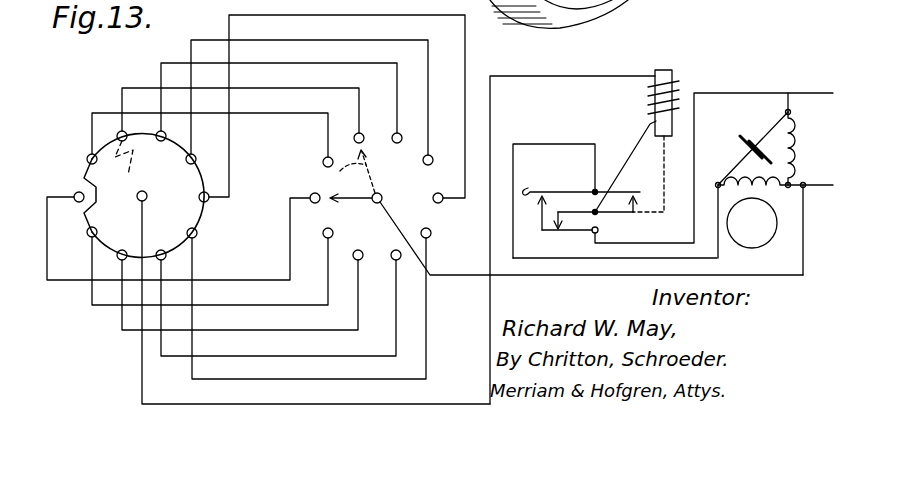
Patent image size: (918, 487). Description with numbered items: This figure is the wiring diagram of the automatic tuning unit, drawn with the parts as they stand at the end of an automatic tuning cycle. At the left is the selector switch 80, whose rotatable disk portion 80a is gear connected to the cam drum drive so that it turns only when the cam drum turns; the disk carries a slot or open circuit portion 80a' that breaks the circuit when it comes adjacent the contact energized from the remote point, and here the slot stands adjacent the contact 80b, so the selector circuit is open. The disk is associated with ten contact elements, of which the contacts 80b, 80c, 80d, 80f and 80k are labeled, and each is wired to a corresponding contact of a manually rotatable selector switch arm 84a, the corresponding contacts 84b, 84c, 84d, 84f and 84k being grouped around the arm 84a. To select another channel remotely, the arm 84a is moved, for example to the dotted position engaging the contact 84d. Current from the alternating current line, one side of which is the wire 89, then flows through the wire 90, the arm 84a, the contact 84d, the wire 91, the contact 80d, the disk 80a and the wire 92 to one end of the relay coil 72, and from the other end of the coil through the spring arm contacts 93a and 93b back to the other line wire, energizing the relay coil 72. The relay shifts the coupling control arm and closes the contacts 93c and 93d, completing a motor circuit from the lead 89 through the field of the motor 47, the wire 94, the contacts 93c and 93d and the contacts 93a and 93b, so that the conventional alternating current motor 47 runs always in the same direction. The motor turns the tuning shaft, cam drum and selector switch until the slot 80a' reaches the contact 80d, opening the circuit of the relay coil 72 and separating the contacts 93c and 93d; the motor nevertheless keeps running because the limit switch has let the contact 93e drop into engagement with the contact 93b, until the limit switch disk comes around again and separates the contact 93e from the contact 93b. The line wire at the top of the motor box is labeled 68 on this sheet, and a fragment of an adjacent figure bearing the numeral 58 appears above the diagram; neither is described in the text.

The adjacent figure fragment 58 is at (568, 14).
The selector switch 80 is at (206, 217).
The rotatable disk portion of the selector switch 80a is at (332, 108).
The slot or open circuit portion 80a' is at (293, 291).
The contact element 80b is at (77, 193).
The contact element 80c is at (88, 157).
The contact element 80d is at (118, 131).
The contact element 80f is at (195, 155).
The contact element 80k is at (90, 237).
The manually rotatable selector switch arm 84a is at (350, 196).
The contact element 84b is at (311, 195).
The contact element 84c is at (324, 157).
The contact element 84d is at (362, 133).
The contact element 84f is at (427, 166).
The contact element 84k is at (334, 232).
The wire 91 is at (289, 89).
The wire 92 is at (140, 379).
The wire 90 is at (527, 275).
The relay coil 72 is at (676, 87).
The spring arm contact 93a is at (604, 226).
The spring arm contact 93b is at (541, 217).
The contact 93c is at (636, 212).
The contact 93d is at (640, 192).
The contact 93e is at (557, 190).
The motor circuit 68 is at (790, 92).
The wire 89 is at (812, 184).
The motor 47 is at (736, 157).
The wire 94 is at (718, 258).